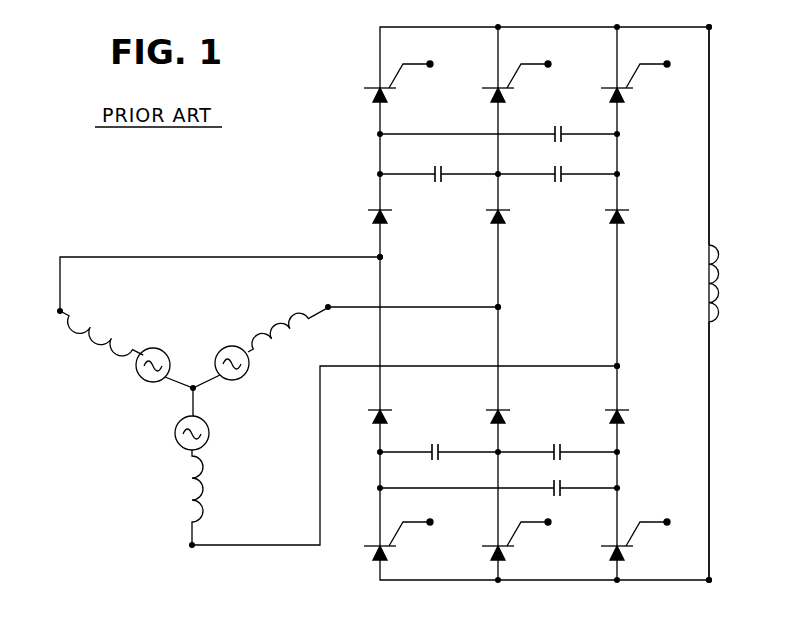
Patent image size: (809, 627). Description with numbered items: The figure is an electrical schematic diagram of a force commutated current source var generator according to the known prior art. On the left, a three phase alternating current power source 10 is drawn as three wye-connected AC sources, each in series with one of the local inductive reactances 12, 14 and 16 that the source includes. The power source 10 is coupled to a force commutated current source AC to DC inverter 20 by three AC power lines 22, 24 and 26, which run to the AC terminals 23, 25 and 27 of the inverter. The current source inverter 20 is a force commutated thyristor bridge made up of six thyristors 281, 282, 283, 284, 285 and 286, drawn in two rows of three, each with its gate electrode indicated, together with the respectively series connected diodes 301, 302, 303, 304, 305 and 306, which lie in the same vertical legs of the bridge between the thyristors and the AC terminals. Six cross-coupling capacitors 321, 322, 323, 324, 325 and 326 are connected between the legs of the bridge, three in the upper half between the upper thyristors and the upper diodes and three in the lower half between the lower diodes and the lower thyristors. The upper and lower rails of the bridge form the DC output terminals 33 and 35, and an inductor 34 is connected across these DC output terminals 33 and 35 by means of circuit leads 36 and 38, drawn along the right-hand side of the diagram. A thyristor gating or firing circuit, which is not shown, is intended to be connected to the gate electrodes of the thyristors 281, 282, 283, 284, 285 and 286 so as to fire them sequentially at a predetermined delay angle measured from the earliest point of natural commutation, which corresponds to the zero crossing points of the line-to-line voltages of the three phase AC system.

The three phase alternating current power source 10 is at (207, 347).
The local inductive reactance 12 is at (120, 315).
The local inductive reactance 14 is at (270, 330).
The local inductive reactance 16 is at (184, 495).
The force commutated current source AC to DC inverter 20 is at (535, 260).
The AC power line 22 is at (213, 253).
The AC terminal 23 is at (386, 258).
The AC power line 24 is at (346, 304).
The AC terminal 25 is at (504, 309).
The AC power line 26 is at (346, 364).
The AC terminal 27 is at (623, 366).
The thyristor 281 is at (398, 76).
The thyristor 282 is at (516, 76).
The thyristor 283 is at (664, 76).
The thyristor 284 is at (398, 534).
The thyristor 285 is at (516, 536).
The thyristor 286 is at (635, 538).
The series connected diode 301 is at (388, 214).
The series connected diode 302 is at (508, 214).
The series connected diode 303 is at (627, 216).
The series connected diode 304 is at (390, 410).
The series connected diode 305 is at (508, 412).
The series connected diode 306 is at (627, 410).
The cross-coupling capacitor 321 is at (453, 162).
The cross-coupling capacitor 322 is at (550, 140).
The cross-coupling capacitor 323 is at (566, 165).
The cross-coupling capacitor 324 is at (424, 459).
The cross-coupling capacitor 325 is at (546, 459).
The cross-coupling capacitor 326 is at (562, 482).
The DC output terminal 33 is at (714, 26).
The inductor 34 is at (720, 297).
The DC output terminal 35 is at (714, 585).
The circuit lead 36 is at (710, 125).
The circuit lead 38 is at (710, 507).